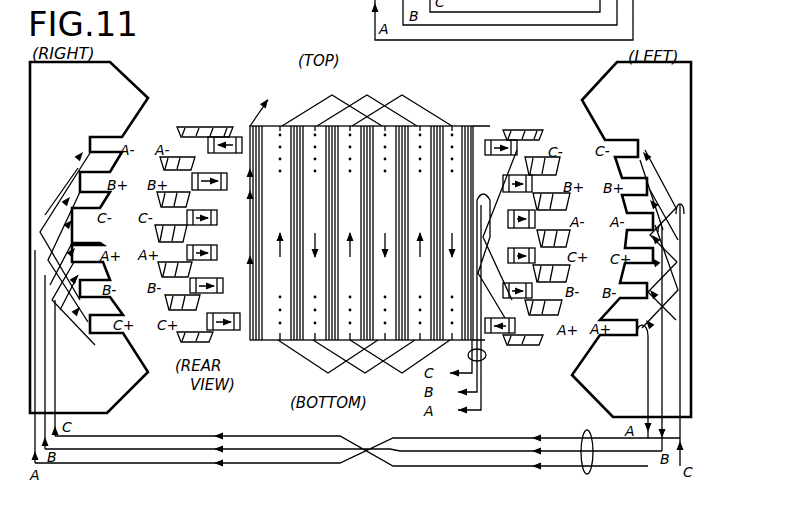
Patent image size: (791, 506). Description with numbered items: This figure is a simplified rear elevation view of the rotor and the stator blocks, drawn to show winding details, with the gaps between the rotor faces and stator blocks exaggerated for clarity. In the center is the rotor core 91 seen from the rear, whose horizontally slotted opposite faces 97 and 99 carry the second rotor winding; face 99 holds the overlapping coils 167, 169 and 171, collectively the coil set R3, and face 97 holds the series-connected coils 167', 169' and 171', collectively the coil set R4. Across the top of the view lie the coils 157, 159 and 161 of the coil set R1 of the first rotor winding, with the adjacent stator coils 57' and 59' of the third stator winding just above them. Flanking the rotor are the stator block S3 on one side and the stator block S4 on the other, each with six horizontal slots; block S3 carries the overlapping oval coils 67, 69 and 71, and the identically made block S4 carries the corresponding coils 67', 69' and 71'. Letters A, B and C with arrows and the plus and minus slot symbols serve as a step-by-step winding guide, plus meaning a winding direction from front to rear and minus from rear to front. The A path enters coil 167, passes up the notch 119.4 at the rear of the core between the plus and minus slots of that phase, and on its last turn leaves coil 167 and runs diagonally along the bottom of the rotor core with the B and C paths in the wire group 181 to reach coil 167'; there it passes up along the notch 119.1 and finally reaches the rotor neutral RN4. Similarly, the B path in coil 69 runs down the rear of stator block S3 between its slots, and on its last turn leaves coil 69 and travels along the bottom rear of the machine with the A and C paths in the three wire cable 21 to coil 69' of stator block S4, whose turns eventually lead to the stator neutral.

The three wire cable 21 is at (585, 430).
The stator coil 57' is at (289, 10).
The stator coil 59' is at (326, 10).
The winding coil 67 is at (679, 277).
The winding coil 67' is at (65, 213).
The winding coil 69 is at (682, 216).
The winding coil 69' is at (61, 237).
The winding coil 71 is at (660, 190).
The winding coil 71' is at (73, 313).
The rotor core 91 is at (248, 135).
The rotor face 97 is at (160, 165).
The rotor face 99 is at (570, 168).
The notch 119.1 is at (247, 260).
The notch 119.4 is at (470, 130).
The rotor coil 157 is at (418, 108).
The rotor coil 159 is at (378, 98).
The rotor coil 161 is at (340, 99).
The rotor coil 167 is at (505, 311).
The rotor coil 167' is at (208, 236).
The rotor coil 169 is at (505, 208).
The rotor coil 169' is at (211, 271).
The rotor coil 171 is at (523, 109).
The rotor coil 171' is at (224, 306).
The wire group 181 is at (487, 358).
The coil set R1 is at (420, 160).
The coil set R3 is at (555, 135).
The coil set R4 is at (210, 165).
The rotor neutral RN4 is at (369, 210).
The stator block S3 is at (662, 114).
The stator block S4 is at (84, 104).